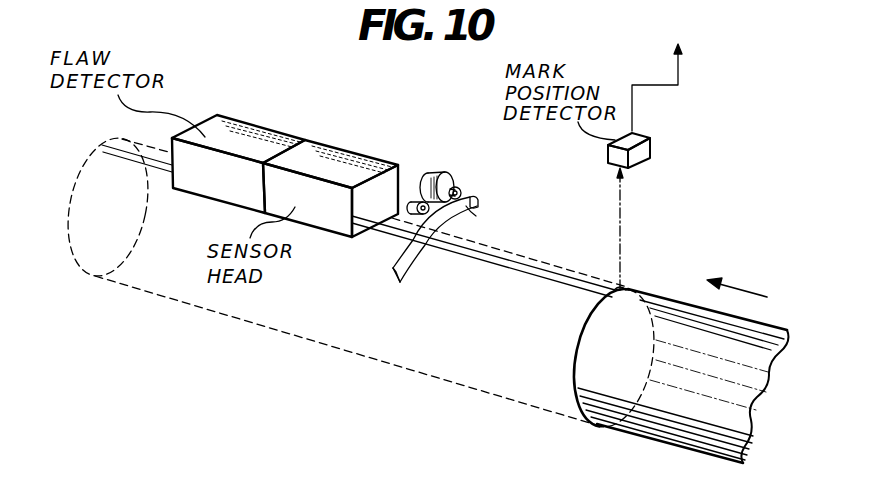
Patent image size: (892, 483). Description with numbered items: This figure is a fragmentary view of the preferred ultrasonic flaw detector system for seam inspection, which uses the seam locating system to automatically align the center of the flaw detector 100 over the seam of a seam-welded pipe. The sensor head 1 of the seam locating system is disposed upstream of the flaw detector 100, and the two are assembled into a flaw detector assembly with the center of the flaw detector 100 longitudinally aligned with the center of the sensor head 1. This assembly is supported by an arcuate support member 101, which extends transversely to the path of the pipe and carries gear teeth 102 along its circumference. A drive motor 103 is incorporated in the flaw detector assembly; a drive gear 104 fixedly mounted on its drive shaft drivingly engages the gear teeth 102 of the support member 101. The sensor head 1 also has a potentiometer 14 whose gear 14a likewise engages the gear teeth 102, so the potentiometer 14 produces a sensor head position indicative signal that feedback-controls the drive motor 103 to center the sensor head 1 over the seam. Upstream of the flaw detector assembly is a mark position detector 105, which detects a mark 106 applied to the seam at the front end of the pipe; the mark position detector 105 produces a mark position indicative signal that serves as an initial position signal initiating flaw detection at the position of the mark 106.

The flaw detector 100 is at (236, 127).
The sensor head 1 is at (333, 152).
The potentiometer 14 is at (416, 200).
The gear 14a is at (427, 233).
The arcuate support member 101 is at (473, 217).
The gear teeth 102 is at (466, 200).
The drive motor 103 is at (435, 172).
The drive gear 104 is at (456, 188).
The mark position detector 105 is at (652, 150).
The mark 106 is at (620, 298).